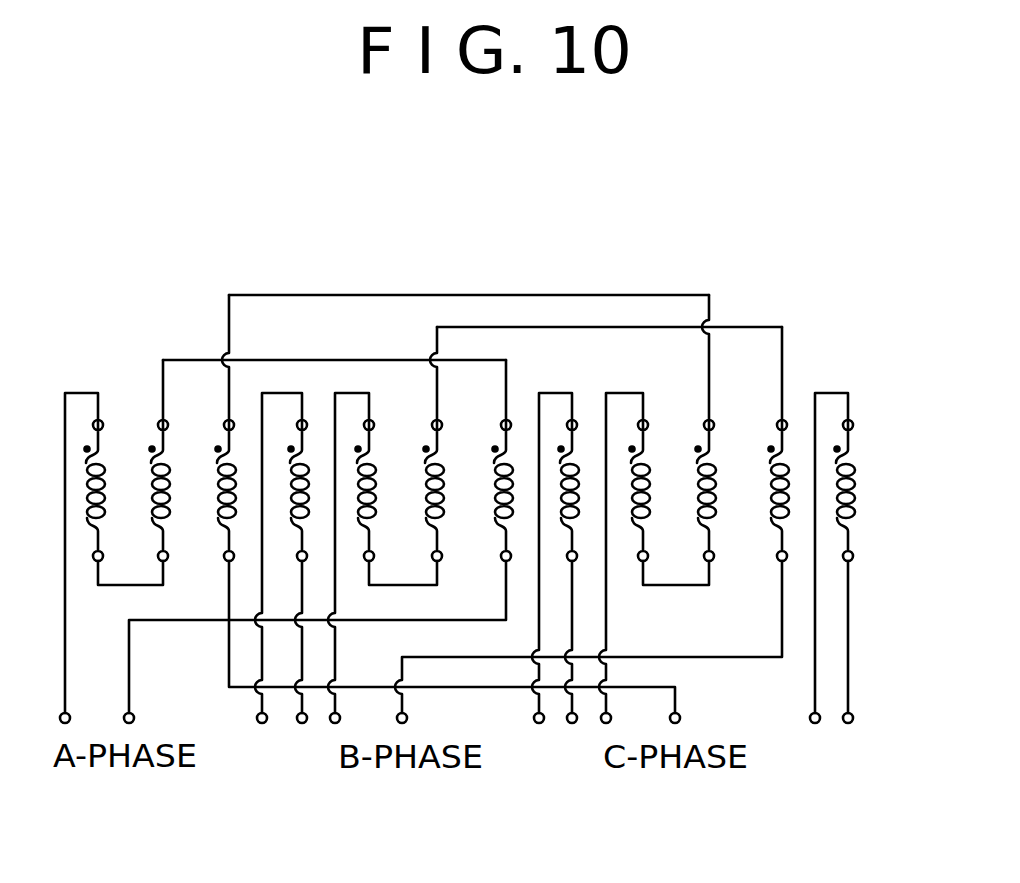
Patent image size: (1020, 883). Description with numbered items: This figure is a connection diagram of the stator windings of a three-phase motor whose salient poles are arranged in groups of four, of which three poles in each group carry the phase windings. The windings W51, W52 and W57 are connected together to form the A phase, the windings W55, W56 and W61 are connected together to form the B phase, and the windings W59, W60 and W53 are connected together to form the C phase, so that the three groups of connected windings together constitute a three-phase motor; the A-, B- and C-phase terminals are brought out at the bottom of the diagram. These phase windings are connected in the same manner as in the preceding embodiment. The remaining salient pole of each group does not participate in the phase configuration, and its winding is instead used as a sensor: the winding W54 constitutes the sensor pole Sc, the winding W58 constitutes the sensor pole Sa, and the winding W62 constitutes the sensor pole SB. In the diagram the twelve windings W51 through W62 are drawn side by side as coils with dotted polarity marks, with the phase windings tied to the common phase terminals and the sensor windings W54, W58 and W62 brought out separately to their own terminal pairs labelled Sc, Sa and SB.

The winding W51 is at (88, 472).
The winding W52 is at (150, 472).
The winding W53 is at (218, 472).
The winding W54 is at (290, 472).
The winding W55 is at (358, 472).
The winding W56 is at (425, 474).
The winding W57 is at (495, 472).
The winding W58 is at (560, 472).
The winding W59 is at (631, 472).
The winding W60 is at (697, 472).
The winding W61 is at (770, 472).
The winding W62 is at (837, 472).
The sensor pole Sc is at (278, 749).
The sensor pole Sa is at (552, 750).
The sensor pole SB is at (827, 749).